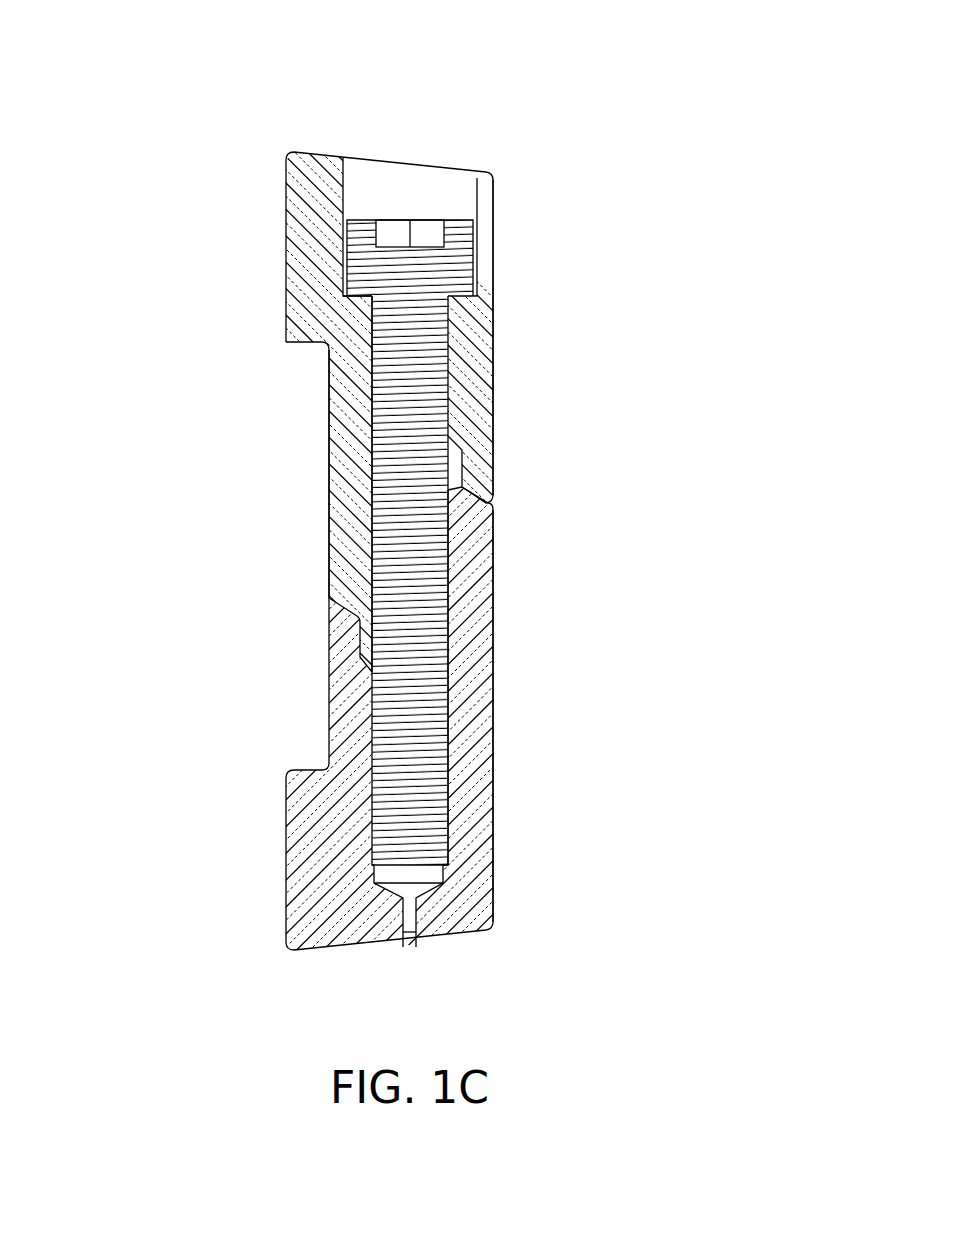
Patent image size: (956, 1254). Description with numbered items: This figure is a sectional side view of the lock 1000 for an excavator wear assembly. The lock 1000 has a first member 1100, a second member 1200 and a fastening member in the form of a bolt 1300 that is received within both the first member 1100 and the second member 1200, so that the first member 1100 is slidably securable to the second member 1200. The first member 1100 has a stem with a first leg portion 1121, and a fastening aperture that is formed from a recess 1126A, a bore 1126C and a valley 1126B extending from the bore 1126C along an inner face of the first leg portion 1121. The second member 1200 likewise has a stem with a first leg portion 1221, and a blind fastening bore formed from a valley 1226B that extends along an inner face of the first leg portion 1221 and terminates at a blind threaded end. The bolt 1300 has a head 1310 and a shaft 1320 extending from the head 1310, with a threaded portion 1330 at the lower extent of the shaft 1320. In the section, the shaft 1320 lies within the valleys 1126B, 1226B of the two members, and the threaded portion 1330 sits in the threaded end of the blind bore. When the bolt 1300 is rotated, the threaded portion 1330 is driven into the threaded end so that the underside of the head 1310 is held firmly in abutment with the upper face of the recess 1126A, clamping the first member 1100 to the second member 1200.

The lock 1000 is at (594, 479).
The first member 1100 is at (276, 222).
The first leg portion 1121 is at (345, 378).
The recess 1126A is at (495, 223).
The valley 1126B is at (370, 494).
The bore 1126C is at (370, 325).
The second member 1200 is at (278, 858).
The first leg portion 1221 is at (473, 583).
The valley 1226B is at (450, 625).
The bolt 1300 is at (390, 478).
The head 1310 is at (440, 264).
The shaft 1320 is at (360, 440).
The threaded portion 1330 is at (385, 731).